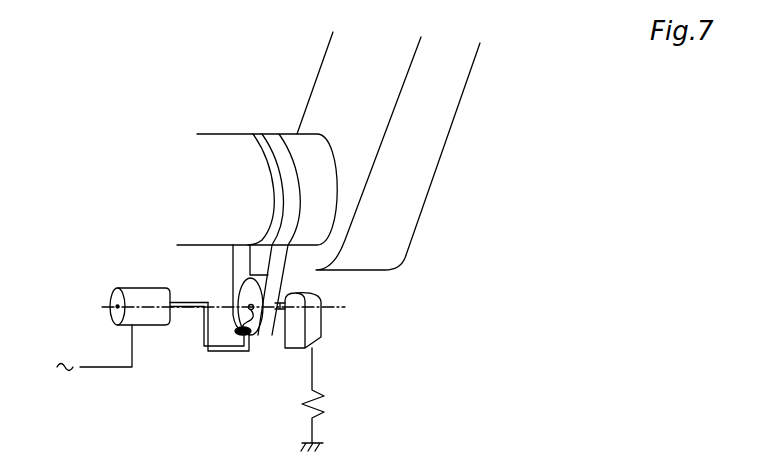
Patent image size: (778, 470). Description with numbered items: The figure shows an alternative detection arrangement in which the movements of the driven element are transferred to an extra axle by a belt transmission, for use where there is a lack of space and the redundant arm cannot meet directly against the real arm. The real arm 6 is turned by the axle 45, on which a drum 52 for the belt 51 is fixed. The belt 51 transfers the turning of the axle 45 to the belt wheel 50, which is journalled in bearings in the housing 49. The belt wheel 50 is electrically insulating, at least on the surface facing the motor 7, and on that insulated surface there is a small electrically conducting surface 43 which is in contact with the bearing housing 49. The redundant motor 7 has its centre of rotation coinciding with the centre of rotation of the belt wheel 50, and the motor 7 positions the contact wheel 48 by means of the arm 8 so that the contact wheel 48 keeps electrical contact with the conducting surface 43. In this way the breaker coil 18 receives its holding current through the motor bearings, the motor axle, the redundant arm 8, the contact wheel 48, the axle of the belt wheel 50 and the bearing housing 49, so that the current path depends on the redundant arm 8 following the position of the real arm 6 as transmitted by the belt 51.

The real arm 6 is at (443, 145).
The redundant motor 7 is at (137, 296).
The redundant arm 8 is at (213, 350).
The breaker coil 18 is at (328, 408).
The electrically conducting surface 43 is at (257, 345).
The axle 45 is at (215, 147).
The contact wheel 48 is at (240, 326).
The bearing housing 49 is at (315, 330).
The belt wheel 50 is at (239, 295).
The belt 51 is at (273, 255).
The drum 52 is at (260, 233).